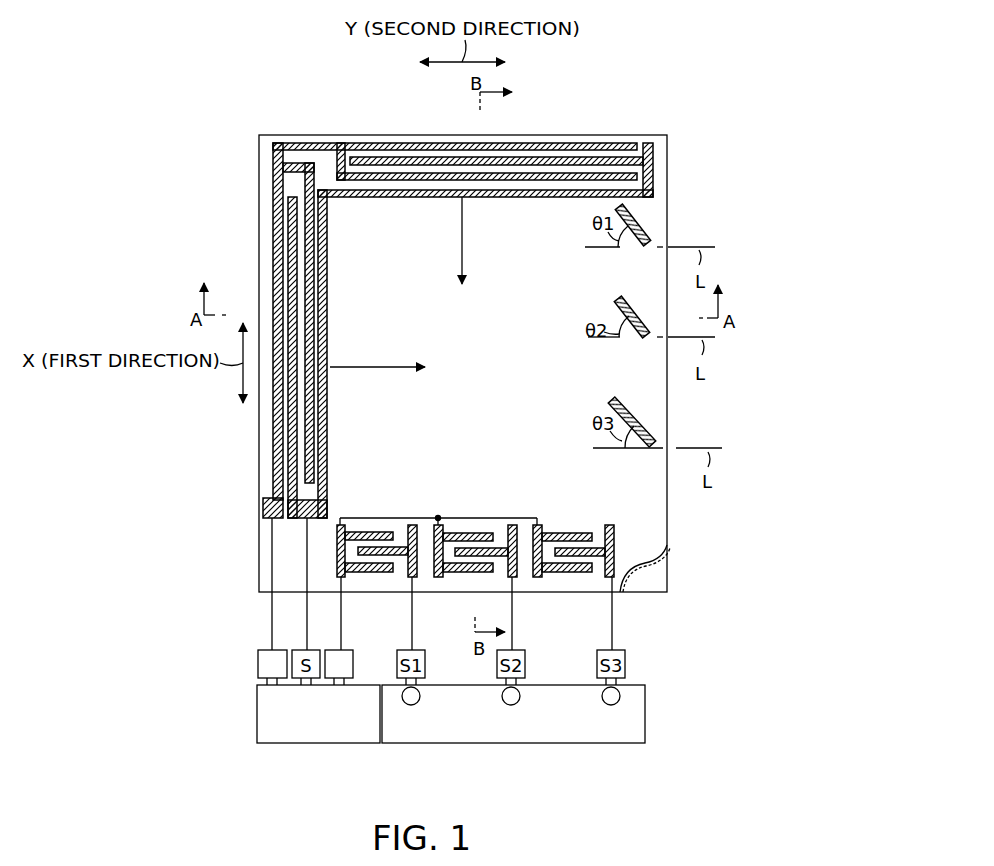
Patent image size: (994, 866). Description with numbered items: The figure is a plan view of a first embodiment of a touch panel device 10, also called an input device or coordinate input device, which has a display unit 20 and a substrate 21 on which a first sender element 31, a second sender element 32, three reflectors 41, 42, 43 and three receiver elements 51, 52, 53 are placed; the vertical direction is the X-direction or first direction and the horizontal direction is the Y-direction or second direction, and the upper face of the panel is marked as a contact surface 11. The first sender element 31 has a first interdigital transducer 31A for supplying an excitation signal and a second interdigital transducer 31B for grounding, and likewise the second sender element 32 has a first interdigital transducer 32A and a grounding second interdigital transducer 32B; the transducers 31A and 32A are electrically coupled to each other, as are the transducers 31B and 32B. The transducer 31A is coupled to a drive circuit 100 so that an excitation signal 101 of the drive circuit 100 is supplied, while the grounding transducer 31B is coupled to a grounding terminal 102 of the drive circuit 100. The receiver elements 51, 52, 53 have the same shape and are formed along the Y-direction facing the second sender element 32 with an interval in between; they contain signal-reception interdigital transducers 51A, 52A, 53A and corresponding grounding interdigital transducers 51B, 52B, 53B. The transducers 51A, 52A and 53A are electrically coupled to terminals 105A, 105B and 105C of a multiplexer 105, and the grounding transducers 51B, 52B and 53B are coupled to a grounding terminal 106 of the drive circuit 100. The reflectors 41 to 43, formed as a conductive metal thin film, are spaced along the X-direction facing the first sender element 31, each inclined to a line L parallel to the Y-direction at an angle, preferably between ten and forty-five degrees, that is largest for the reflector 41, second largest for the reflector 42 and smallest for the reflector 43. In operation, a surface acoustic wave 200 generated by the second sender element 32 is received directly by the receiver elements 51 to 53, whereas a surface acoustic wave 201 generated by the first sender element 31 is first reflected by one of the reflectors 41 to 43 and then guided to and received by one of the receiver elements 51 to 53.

The touch panel device 10 is at (672, 28).
The contact surface 11 is at (650, 383).
The display unit 20 is at (648, 579).
The substrate 21 is at (646, 516).
The first sender element 31 is at (264, 229).
The first interdigital transducer 31A is at (327, 399).
The second interdigital transducer 31B is at (296, 432).
The second sender element 32 is at (545, 133).
The first interdigital transducer 32A is at (531, 199).
The second interdigital transducer 32B is at (385, 108).
The reflector 41 is at (640, 222).
The reflector 42 is at (618, 303).
The reflector 43 is at (640, 427).
The receiver element 51 is at (367, 580).
The interdigital transducer 51A is at (412, 525).
The grounding interdigital transducer 51B is at (373, 532).
The receiver element 52 is at (447, 580).
The interdigital transducer 52A is at (515, 525).
The grounding interdigital transducer 52B is at (470, 533).
The receiver element 53 is at (557, 580).
The interdigital transducer 53A is at (610, 525).
The grounding interdigital transducer 53B is at (570, 533).
The drive circuit 100 is at (320, 743).
The excitation signal 101 is at (272, 627).
The grounding terminal 102 is at (258, 663).
The multiplexer 105 is at (513, 737).
The terminal 105A is at (411, 705).
The terminal 105B is at (511, 705).
The terminal 105C is at (611, 705).
The grounding terminal 106 is at (353, 664).
The surface acoustic wave 200 is at (462, 240).
The surface acoustic wave 201 is at (368, 367).